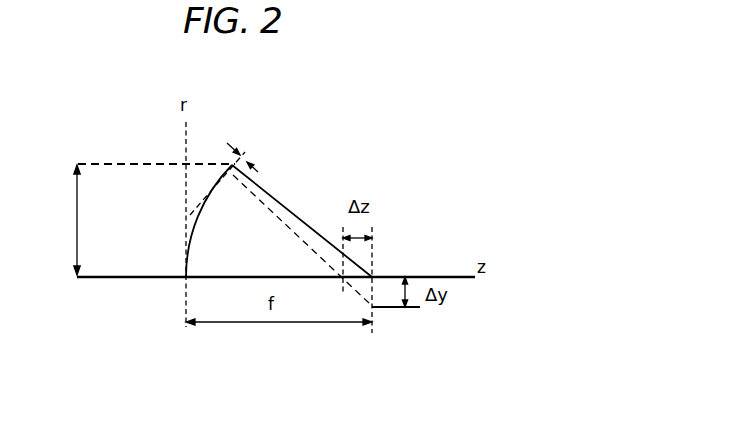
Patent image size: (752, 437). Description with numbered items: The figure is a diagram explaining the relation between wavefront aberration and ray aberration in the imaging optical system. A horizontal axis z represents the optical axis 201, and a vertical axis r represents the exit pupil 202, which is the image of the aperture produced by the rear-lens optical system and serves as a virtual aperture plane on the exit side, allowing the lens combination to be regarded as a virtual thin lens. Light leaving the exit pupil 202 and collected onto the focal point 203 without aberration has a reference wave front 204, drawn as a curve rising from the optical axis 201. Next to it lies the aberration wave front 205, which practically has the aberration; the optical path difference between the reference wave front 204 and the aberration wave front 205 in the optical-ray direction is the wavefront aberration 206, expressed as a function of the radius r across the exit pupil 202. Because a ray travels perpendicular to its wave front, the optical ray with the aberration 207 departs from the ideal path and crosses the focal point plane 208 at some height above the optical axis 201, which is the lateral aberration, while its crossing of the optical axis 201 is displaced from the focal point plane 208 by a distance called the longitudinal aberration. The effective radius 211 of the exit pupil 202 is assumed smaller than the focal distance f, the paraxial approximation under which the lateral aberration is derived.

The optical axis 201 is at (123, 279).
The exit pupil 202 is at (186, 216).
The focal point 203 is at (373, 273).
The reference wave front 204 is at (210, 190).
The aberration wave front 205 is at (204, 203).
The wavefront aberration 206 is at (247, 155).
The optical ray with the aberration 207 is at (314, 250).
The focal point plane 208 is at (373, 228).
The effective radius (effective pupil) 211 is at (132, 219).